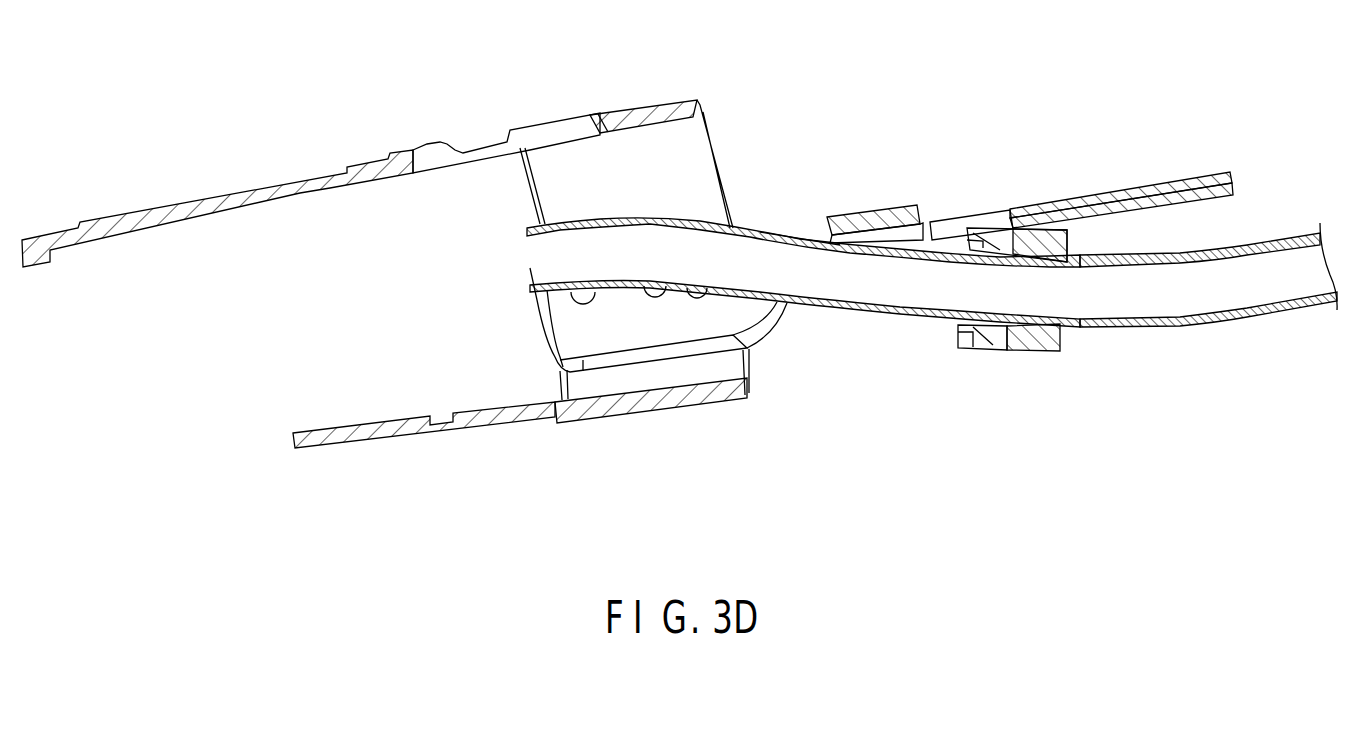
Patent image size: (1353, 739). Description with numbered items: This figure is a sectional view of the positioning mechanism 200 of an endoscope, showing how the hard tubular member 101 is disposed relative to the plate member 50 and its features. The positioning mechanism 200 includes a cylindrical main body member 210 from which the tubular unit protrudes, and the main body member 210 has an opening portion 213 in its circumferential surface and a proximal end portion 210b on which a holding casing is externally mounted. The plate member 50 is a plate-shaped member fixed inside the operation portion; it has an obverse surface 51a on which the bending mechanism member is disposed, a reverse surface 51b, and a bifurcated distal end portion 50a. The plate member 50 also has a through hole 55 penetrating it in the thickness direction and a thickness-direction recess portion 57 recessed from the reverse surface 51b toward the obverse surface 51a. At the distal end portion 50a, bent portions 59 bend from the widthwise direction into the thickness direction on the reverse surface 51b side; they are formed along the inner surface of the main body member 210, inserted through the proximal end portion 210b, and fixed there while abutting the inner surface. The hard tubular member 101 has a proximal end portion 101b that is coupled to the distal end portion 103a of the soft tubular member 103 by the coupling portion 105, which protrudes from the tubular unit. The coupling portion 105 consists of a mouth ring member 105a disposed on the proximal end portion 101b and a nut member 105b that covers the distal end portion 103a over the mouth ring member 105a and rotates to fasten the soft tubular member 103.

The positioning mechanism 200 is at (320, 140).
The main body member 210 is at (205, 197).
The opening portion 213 is at (518, 128).
The proximal end portion 210b is at (660, 102).
The bent portions 59 is at (627, 330).
The hard tubular member 101 is at (750, 278).
The proximal end portion 101b is at (887, 318).
The soft tubular member 103 is at (1177, 334).
The distal end portion 103a is at (1047, 354).
The coupling portion 105 is at (978, 366).
The mouth ring member 105a is at (927, 322).
The nut member 105b is at (1023, 350).
The plate member 50 is at (1164, 158).
The distal end portion 50a is at (790, 236).
The thickness-direction recess portion 57 is at (872, 208).
The through hole 55 is at (964, 210).
The obverse surface 51a is at (1053, 200).
The reverse surface 51b is at (1092, 197).